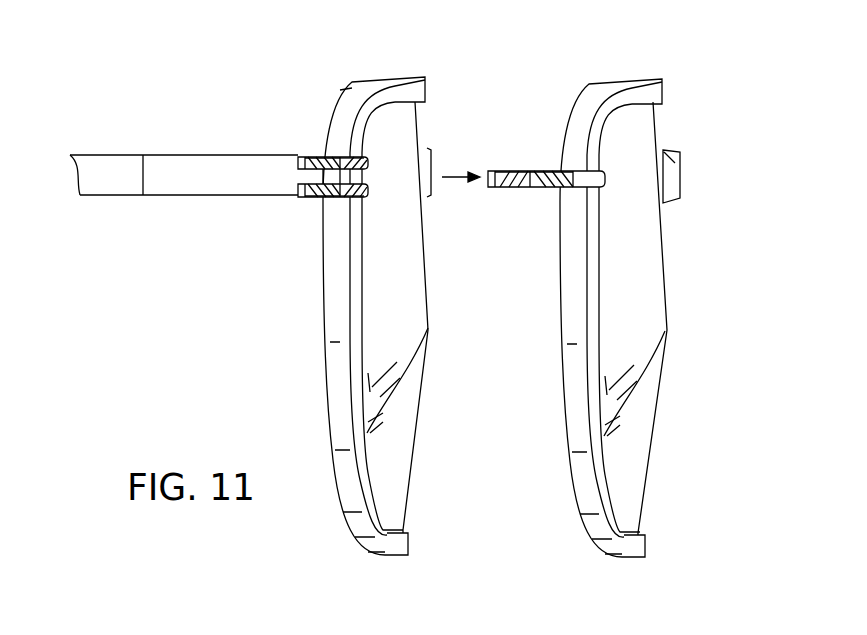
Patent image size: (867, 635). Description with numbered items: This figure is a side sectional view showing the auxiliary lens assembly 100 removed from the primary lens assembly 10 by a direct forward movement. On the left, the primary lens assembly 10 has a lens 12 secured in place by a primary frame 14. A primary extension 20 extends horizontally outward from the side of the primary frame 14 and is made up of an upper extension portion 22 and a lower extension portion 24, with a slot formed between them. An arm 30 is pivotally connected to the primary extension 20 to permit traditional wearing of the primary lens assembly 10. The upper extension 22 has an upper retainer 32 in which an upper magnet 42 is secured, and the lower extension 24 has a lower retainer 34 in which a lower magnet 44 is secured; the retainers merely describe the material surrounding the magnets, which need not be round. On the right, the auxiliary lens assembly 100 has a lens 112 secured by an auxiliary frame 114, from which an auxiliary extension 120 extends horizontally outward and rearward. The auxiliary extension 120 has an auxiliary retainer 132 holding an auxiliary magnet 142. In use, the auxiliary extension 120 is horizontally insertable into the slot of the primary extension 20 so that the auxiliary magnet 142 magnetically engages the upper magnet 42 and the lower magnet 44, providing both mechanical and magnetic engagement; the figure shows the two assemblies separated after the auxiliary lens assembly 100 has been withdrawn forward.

The primary lens assembly 10 is at (130, 121).
The lenses 12 is at (418, 450).
The primary frame 14 is at (385, 77).
The primary extension 20 is at (199, 172).
The upper extension portion 22 is at (362, 157).
The lower extension portion 24 is at (363, 198).
The arm 30 is at (100, 196).
The upper retainer 32 is at (298, 158).
The lower retainer 34 is at (300, 196).
The upper magnet 42 is at (312, 157).
The lower magnet 44 is at (314, 197).
The auxiliary lens assembly 100 is at (678, 520).
The lenses 112 is at (667, 294).
The auxiliary frame 114 is at (637, 80).
The auxiliary extension 120 is at (548, 189).
The auxiliary retainer 132 is at (488, 175).
The auxiliary magnet 142 is at (520, 172).